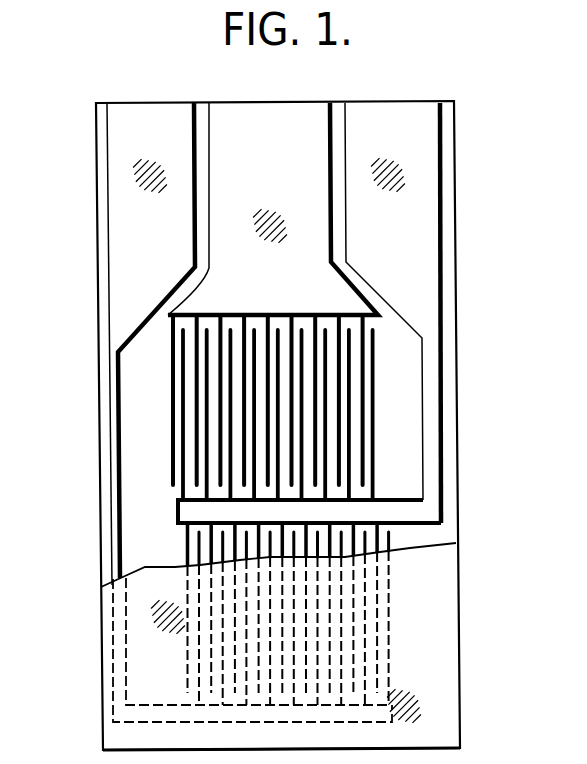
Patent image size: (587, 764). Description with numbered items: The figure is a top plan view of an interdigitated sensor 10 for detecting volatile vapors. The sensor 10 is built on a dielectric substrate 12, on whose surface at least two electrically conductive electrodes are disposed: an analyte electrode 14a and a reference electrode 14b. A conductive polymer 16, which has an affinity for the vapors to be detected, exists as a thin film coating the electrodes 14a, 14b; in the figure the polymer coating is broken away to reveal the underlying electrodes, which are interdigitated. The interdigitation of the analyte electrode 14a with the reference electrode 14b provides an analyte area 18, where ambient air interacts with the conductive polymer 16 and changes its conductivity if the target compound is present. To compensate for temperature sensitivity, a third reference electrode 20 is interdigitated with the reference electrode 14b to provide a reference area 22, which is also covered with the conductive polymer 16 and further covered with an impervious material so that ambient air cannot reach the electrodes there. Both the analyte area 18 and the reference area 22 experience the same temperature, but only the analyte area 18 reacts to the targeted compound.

The sensor 10 is at (483, 110).
The dielectric substrate 12 is at (413, 538).
The analyte electrode 14a is at (135, 295).
The reference electrode 14b is at (420, 302).
The conductive polymer 16 is at (440, 682).
The analyte area 18 is at (298, 629).
The third reference electrode 20 is at (313, 222).
The reference area 22 is at (298, 457).